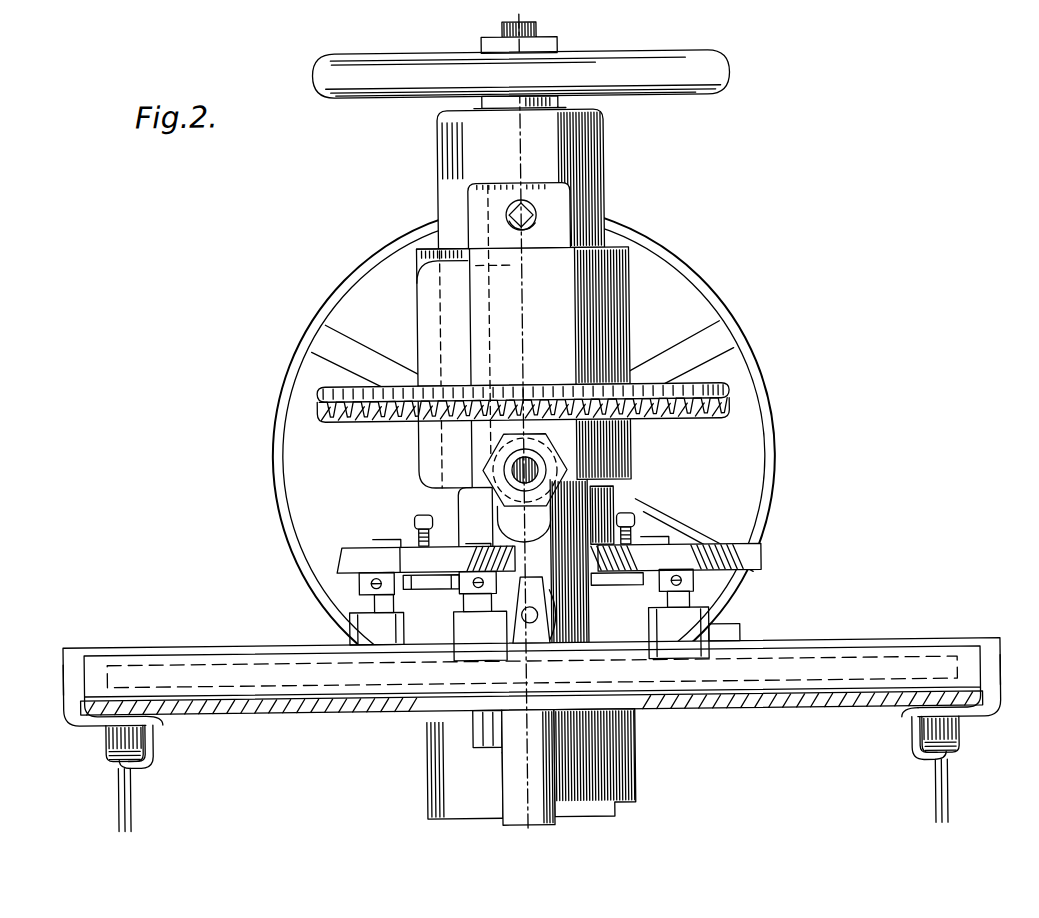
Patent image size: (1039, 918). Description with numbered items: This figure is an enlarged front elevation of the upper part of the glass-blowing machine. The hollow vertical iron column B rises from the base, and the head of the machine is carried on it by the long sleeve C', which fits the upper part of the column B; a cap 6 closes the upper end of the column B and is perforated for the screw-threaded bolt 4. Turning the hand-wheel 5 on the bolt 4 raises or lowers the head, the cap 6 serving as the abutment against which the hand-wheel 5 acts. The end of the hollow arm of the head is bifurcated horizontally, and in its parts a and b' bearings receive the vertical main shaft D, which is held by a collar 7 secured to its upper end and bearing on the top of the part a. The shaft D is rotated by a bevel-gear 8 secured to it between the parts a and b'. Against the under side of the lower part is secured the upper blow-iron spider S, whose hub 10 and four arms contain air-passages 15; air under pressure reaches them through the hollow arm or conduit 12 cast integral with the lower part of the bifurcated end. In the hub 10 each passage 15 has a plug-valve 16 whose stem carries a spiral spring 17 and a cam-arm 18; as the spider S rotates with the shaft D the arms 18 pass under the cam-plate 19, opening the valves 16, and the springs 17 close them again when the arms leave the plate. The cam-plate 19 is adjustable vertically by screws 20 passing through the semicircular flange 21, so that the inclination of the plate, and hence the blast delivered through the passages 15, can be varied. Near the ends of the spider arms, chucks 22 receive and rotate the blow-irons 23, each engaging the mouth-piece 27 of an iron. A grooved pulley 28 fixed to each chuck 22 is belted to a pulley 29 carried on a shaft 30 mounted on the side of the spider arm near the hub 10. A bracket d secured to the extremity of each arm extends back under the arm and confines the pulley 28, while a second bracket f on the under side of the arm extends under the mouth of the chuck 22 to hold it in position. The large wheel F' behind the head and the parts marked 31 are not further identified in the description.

The screw-threaded bolt 4 is at (580, 26).
The hand-wheel 5 is at (739, 76).
The cap 6 is at (566, 112).
The collar 7 is at (508, 207).
The bevel-gear 8 is at (711, 402).
The hub 10 is at (462, 721).
The hollow arm or conduit 12 is at (512, 468).
The air-passages 15 is at (183, 671).
The plug-valve 16 is at (598, 641).
The spiral springs 17 is at (703, 629).
The cam-arm 18 is at (356, 620).
The cam-plate 19 is at (336, 575).
The screws 20 is at (420, 515).
The semicircular flange 21 is at (342, 553).
The chucks 22 is at (100, 728).
The blow-irons 23 is at (123, 794).
The mouth-piece 27 is at (105, 752).
The pulley 28 is at (144, 714).
The pulley 29 is at (334, 709).
The shafts 30 is at (367, 590).
The clamp arm 31 is at (386, 546).
The part of bifurcated end of arm a is at (507, 305).
The part of bifurcated end of arm b' is at (403, 507).
The hollow vertical iron column B is at (611, 158).
The long sleeve C' is at (654, 352).
The vertical main shaft D is at (473, 181).
The bracket d is at (61, 680).
The second bracket f is at (149, 749).
The hand wheel F' is at (539, 456).
The upper blow-iron spider S is at (251, 646).